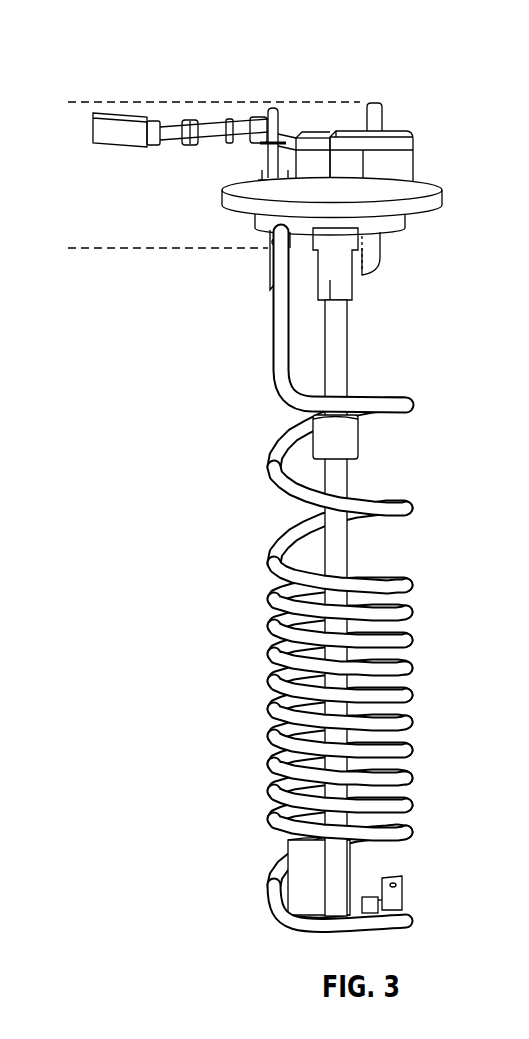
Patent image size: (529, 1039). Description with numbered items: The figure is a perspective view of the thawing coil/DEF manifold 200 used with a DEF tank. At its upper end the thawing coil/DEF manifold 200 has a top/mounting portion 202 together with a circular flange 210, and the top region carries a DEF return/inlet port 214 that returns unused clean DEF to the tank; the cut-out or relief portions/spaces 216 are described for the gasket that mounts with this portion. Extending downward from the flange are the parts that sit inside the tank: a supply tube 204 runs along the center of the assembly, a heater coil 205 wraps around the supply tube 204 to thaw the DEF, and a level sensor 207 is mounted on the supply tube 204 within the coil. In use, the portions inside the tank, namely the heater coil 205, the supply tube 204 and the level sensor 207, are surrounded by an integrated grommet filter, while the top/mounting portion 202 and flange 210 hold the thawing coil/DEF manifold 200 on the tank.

The thawing coil/DEF manifold 200 is at (158, 32).
The top/mounting portion 202 is at (68, 102).
The supply tube 204 is at (341, 351).
The heater coil 205 is at (408, 411).
The level sensor 207 is at (347, 443).
The circular flange 210 is at (432, 199).
The DEF return/inlet port 214 is at (226, 190).
The cut-out or relief portions/spaces 216 is at (380, 122).